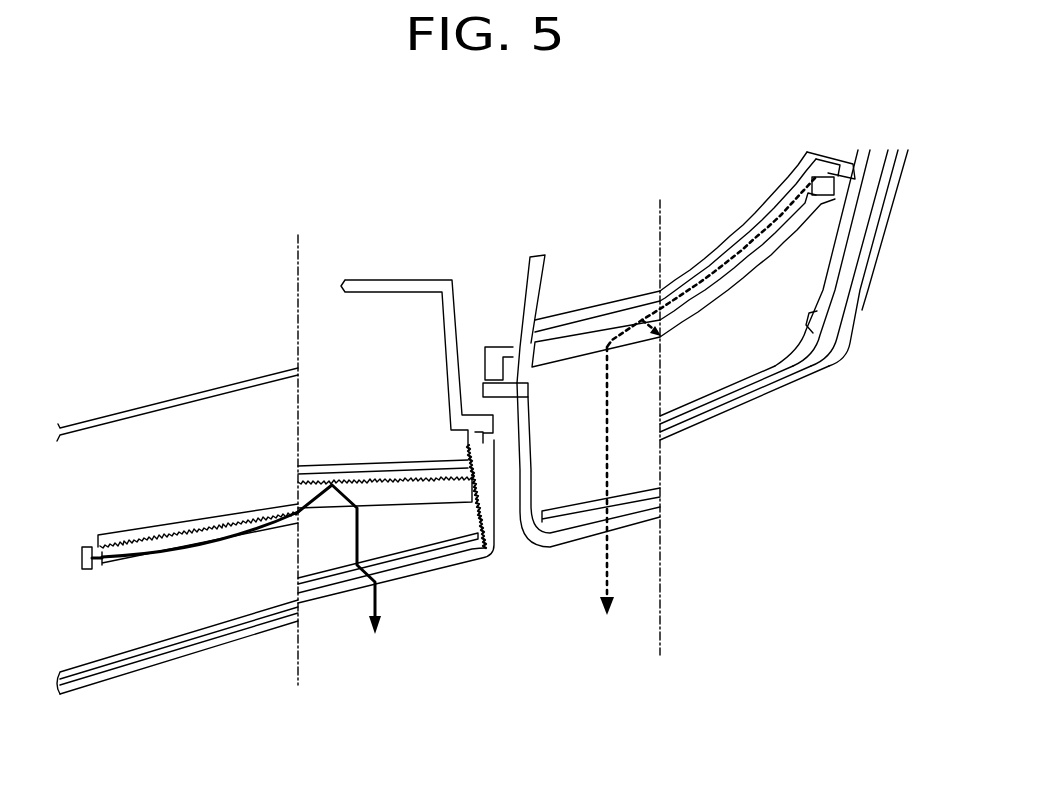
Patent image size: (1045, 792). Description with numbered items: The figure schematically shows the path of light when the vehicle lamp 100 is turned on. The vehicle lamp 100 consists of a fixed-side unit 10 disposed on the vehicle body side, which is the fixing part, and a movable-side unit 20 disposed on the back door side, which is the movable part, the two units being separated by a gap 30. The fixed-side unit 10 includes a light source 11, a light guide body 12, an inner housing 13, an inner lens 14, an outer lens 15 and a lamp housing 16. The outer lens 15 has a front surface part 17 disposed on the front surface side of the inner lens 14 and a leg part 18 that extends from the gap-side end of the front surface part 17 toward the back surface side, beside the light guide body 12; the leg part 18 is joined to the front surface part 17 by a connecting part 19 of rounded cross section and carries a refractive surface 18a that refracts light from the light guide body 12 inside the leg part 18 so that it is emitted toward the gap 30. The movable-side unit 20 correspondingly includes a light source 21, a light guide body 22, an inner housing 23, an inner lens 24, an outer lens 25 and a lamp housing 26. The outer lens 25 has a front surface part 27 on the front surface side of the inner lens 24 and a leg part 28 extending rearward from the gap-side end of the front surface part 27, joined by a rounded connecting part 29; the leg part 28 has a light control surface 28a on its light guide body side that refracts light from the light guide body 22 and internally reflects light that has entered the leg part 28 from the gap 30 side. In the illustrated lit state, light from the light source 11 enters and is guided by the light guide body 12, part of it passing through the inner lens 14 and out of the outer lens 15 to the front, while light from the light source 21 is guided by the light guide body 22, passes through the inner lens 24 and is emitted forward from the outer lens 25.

The fixed-side unit 10 is at (711, 384).
The vehicle lamp 100 is at (703, 481).
The light source 11 is at (830, 180).
The light guide body 12 is at (597, 340).
The inner housing 13 is at (822, 158).
The inner lens 14 is at (568, 516).
The outer lens 15 is at (641, 518).
The lamp housing 16 is at (530, 280).
The front surface part 17 is at (617, 540).
The leg part 18 is at (540, 552).
The refractive surface 18a is at (535, 465).
The connecting part 19 is at (555, 548).
The movable-side unit 20 is at (267, 491).
The light source 21 is at (82, 558).
The light guide body 22 is at (150, 546).
The inner housing 23 is at (202, 526).
The inner lens 24 is at (147, 654).
The outer lens 25 is at (188, 653).
The lamp housing 26 is at (176, 399).
The front surface part 27 is at (418, 586).
The leg part 28 is at (502, 542).
The light control surface 28a is at (478, 508).
The connecting part 29 is at (490, 562).
The gap 30 is at (517, 562).